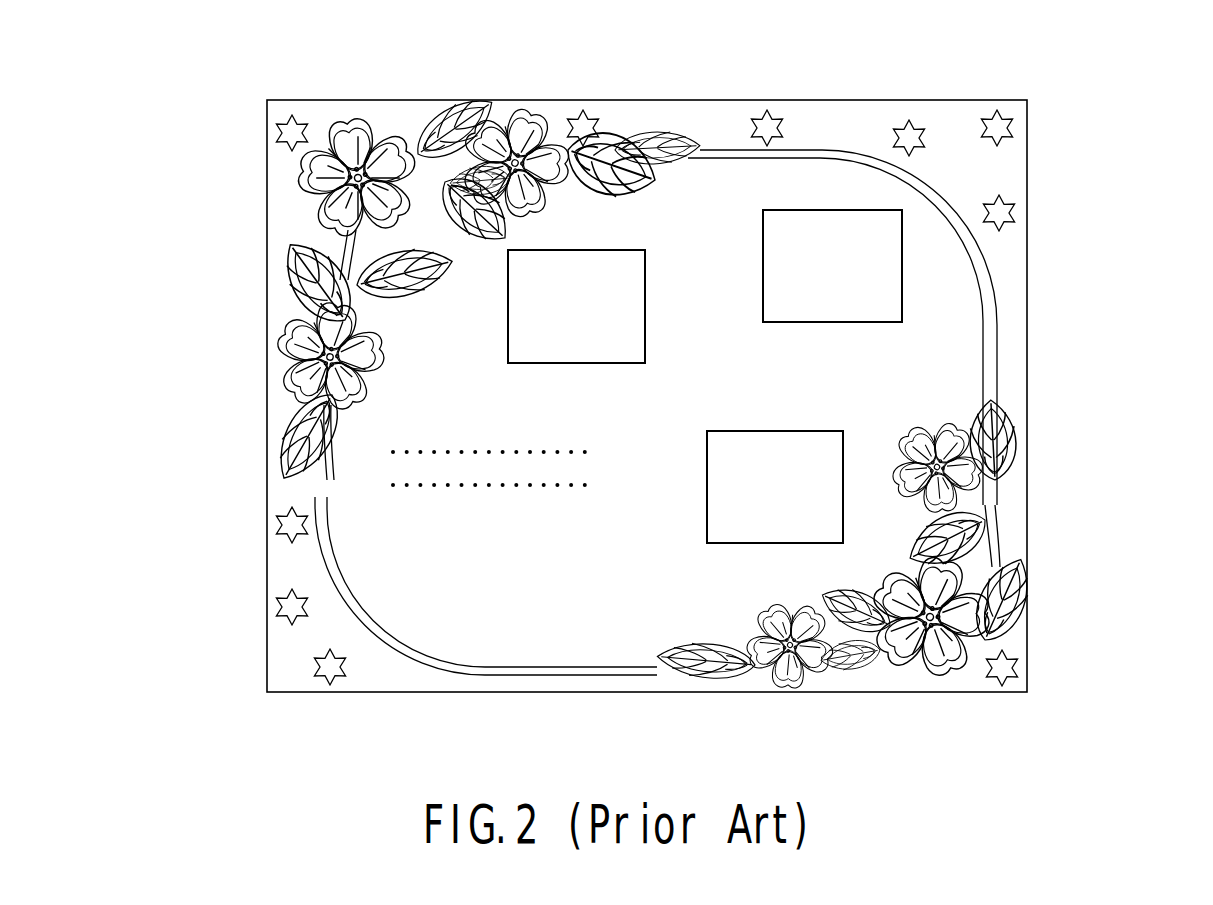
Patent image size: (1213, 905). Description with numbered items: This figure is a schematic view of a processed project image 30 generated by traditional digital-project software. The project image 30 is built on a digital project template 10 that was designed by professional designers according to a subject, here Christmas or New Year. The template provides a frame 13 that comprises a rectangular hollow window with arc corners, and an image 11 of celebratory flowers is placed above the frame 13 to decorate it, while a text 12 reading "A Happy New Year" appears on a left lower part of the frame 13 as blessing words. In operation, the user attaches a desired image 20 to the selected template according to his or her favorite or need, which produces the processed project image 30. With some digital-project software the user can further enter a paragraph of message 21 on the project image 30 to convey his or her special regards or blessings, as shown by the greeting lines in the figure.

The digital project template 10 is at (627, 386).
The image 11 is at (290, 278).
The text 12 is at (459, 667).
The frame 13 is at (670, 110).
The desired image 20 is at (633, 250).
The message 21 is at (376, 524).
The project image 30 is at (1072, 274).